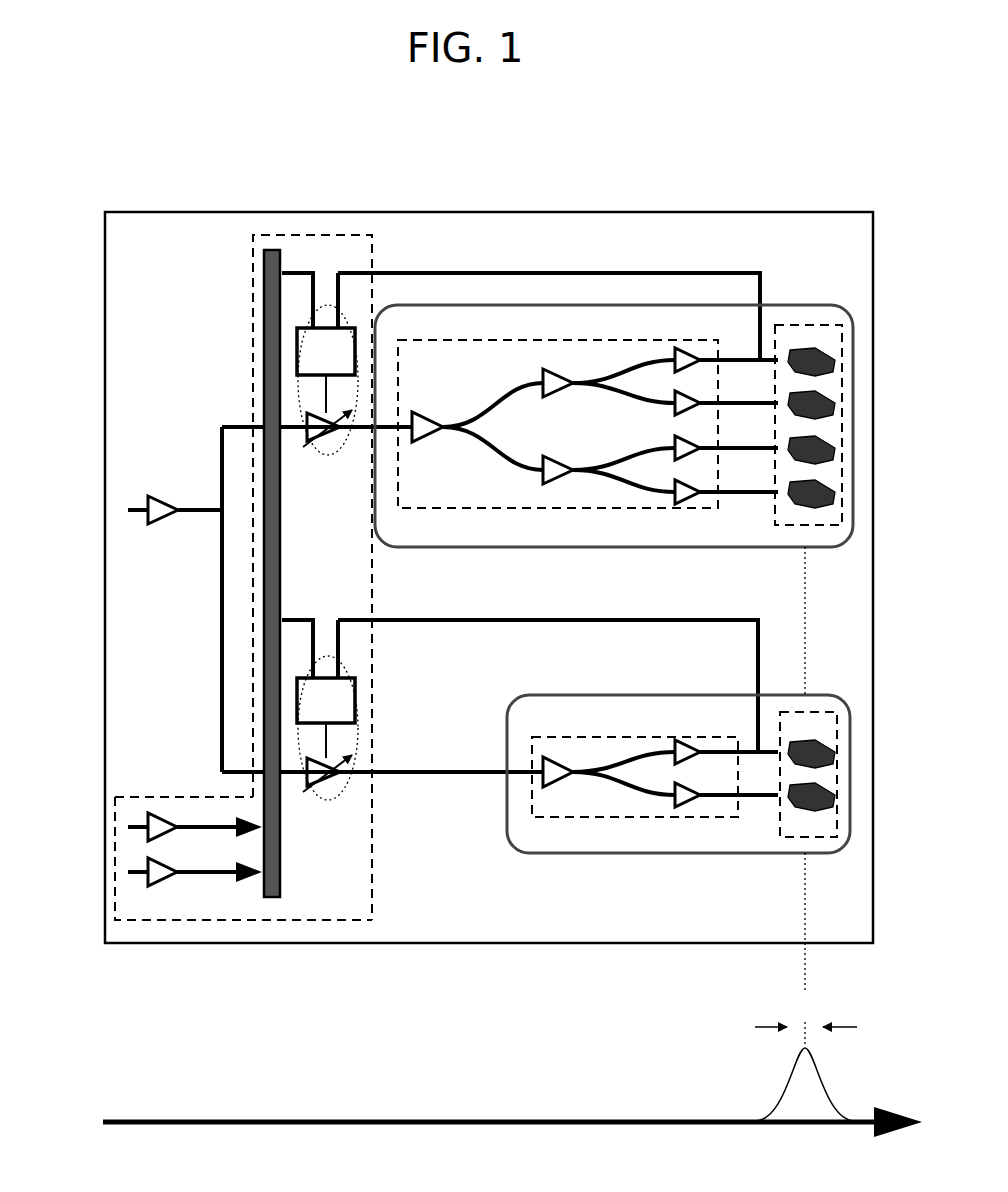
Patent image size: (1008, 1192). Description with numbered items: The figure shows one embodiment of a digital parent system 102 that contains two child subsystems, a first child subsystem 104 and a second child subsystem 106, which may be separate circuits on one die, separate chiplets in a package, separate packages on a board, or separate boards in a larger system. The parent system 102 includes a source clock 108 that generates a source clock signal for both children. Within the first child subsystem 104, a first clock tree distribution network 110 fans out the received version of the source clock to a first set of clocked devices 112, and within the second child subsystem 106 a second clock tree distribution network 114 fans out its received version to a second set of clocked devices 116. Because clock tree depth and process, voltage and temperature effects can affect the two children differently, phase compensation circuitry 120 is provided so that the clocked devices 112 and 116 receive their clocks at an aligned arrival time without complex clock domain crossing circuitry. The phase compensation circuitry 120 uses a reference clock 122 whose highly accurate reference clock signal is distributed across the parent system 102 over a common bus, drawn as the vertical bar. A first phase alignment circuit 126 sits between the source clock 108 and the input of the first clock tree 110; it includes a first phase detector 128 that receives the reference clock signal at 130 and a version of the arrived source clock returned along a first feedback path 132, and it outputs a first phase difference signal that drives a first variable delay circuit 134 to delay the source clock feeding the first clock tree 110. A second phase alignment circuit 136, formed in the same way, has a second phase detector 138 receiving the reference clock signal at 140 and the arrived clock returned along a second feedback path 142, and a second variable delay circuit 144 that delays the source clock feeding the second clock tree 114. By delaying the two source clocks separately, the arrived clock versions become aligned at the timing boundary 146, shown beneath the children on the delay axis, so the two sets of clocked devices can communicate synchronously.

The parent system 102 is at (489, 577).
The first child subsystem 104 is at (614, 426).
The second child subsystem 106 is at (678, 774).
The source clock 108 is at (86, 440).
The first clock tree distribution network 110 is at (590, 341).
The first set of clocked devices 112 is at (800, 325).
The second clock tree distribution network 114 is at (690, 740).
The second set of clocked devices 116 is at (840, 712).
The phase compensation circuitry 120 is at (327, 235).
The reference clock 122 is at (86, 762).
The first phase alignment circuit 126 is at (325, 300).
The first phase detector 128 is at (350, 326).
The reference clock signal input to first phase detector 130 is at (285, 322).
The first feedback path 132 is at (492, 272).
The first variable delay circuit 134 is at (345, 442).
The second phase alignment circuit 136 is at (325, 650).
The second phase detector 138 is at (355, 702).
The reference clock signal input to second phase detector 140 is at (285, 667).
The second feedback path 142 is at (553, 620).
The second variable delay circuit 144 is at (345, 787).
The aligned timing boundary 146 is at (808, 625).